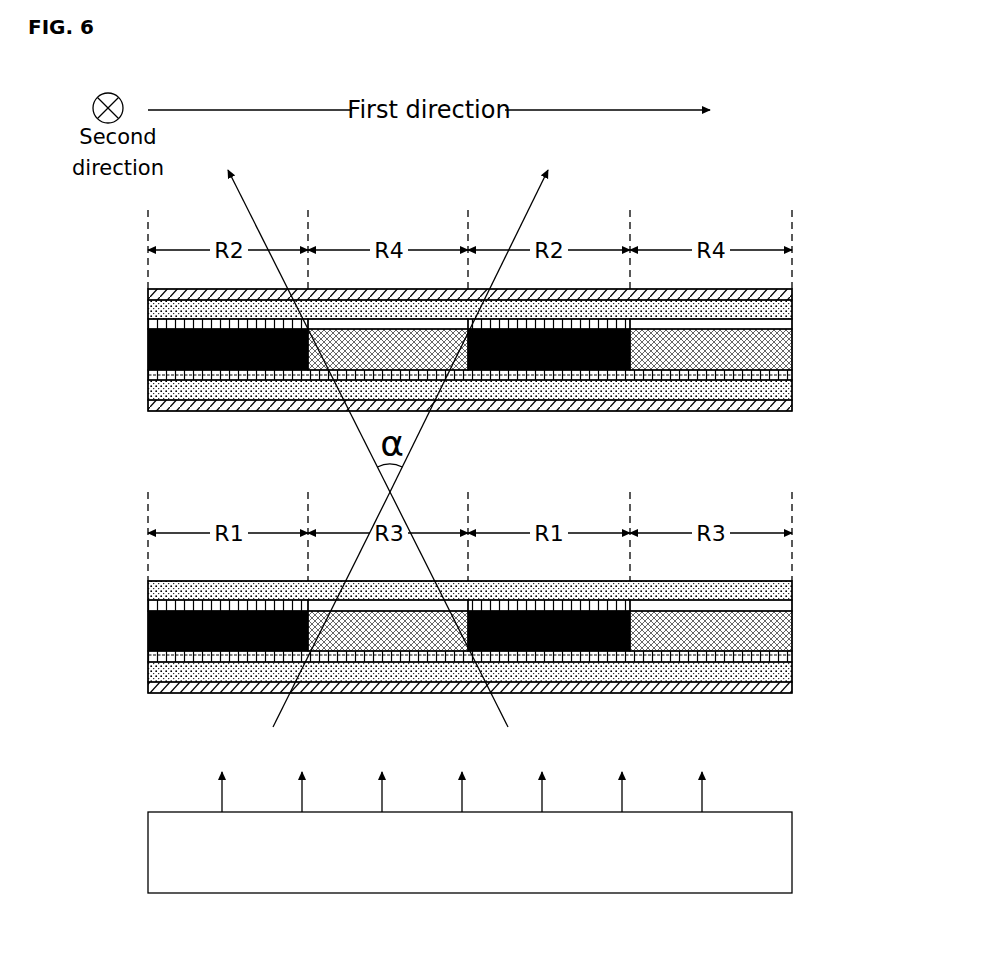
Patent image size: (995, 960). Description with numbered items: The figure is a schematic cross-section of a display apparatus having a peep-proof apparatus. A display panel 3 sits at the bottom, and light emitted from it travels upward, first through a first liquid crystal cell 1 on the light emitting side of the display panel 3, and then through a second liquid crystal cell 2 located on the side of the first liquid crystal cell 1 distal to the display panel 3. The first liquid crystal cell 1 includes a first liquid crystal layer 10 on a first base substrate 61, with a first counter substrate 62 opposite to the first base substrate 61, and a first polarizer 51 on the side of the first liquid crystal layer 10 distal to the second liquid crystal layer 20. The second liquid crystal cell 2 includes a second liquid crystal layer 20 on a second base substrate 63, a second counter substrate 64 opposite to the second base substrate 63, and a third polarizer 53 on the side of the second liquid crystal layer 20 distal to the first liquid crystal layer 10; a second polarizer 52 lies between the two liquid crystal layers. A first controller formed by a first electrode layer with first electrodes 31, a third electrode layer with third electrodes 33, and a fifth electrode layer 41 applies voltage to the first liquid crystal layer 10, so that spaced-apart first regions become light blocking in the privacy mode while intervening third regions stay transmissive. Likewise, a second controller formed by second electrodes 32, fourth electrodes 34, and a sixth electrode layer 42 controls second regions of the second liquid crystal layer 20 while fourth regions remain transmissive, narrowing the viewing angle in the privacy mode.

The first liquid crystal cell 1 is at (130, 582).
The second liquid crystal cell 2 is at (130, 290).
The display panel 3 is at (130, 813).
The first liquid crystal layer 10 is at (792, 630).
The second liquid crystal layer 20 is at (792, 348).
The first electrodes 31 is at (230, 607).
The second electrodes 32 is at (230, 325).
The third electrodes 33 is at (390, 605).
The fourth electrodes 34 is at (388, 323).
The fifth electrode layer 41 is at (792, 657).
The sixth electrode layer 42 is at (792, 374).
The first polarizer 51 is at (792, 693).
The second polarizer 52 is at (792, 411).
The third polarizer 53 is at (792, 292).
The first base substrate 61 is at (792, 672).
The first counter substrate 62 is at (792, 590).
The second base substrate 63 is at (792, 392).
The second counter substrate 64 is at (792, 309).